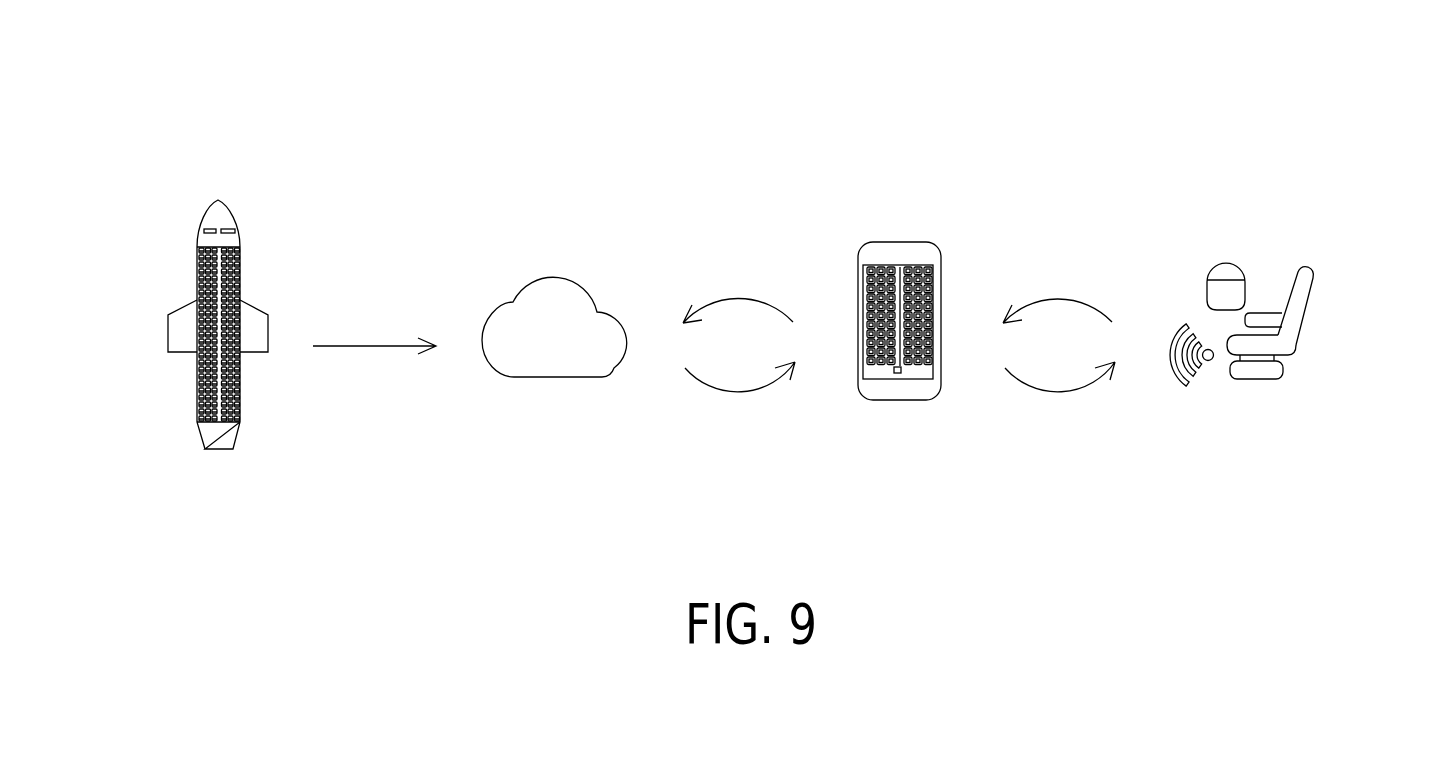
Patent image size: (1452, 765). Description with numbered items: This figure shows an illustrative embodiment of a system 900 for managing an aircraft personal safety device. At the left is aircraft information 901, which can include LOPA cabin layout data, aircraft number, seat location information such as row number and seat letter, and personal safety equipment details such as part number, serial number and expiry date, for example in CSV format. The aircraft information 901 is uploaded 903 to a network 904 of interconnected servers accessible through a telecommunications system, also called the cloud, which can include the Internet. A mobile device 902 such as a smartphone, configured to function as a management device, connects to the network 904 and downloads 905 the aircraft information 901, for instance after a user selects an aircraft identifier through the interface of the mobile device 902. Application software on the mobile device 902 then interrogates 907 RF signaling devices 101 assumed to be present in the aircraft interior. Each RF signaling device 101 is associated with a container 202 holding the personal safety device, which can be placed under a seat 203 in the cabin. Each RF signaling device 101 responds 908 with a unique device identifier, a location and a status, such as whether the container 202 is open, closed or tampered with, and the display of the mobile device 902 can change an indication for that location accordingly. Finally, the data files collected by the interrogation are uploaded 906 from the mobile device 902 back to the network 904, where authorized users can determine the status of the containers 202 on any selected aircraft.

The system 900 is at (203, 112).
The aircraft information 901 is at (208, 451).
The mobile device 902 is at (897, 401).
The upload 903 is at (372, 347).
The network 904 is at (548, 378).
The download 905 is at (737, 392).
The upload 906 is at (738, 298).
The interrogation 907 is at (1052, 392).
The response 908 is at (1058, 300).
The RF signaling device 101 is at (1223, 262).
The container 202 is at (1258, 360).
The seat 203 is at (1310, 300).